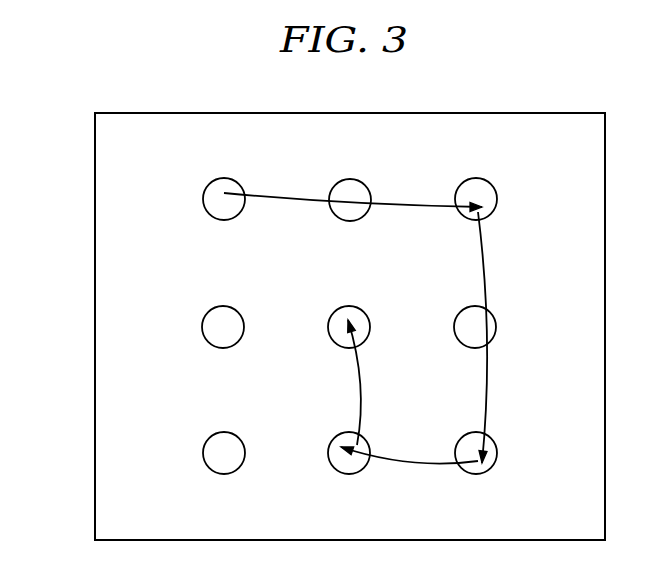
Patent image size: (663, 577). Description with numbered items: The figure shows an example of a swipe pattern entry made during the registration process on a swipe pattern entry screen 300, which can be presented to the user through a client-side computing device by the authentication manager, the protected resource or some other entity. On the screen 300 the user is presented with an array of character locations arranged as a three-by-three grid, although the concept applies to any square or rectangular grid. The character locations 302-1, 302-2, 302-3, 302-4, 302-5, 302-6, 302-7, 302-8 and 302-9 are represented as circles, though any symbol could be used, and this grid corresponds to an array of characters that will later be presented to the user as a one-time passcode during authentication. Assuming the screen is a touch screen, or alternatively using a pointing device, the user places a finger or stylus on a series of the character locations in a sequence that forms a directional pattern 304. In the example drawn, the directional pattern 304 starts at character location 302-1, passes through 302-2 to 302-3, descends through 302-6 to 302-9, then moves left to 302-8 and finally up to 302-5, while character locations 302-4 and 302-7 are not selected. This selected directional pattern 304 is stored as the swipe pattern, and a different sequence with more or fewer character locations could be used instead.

The swipe pattern entry screen 300 is at (94, 127).
The character location 302-1 is at (203, 199).
The character location 302-2 is at (350, 179).
The character location 302-3 is at (497, 199).
The character location 302-4 is at (202, 327).
The character location 302-5 is at (350, 306).
The character location 302-6 is at (496, 327).
The character location 302-7 is at (203, 452).
The character location 302-8 is at (348, 475).
The character location 302-9 is at (497, 454).
The directional pattern 304 is at (488, 386).